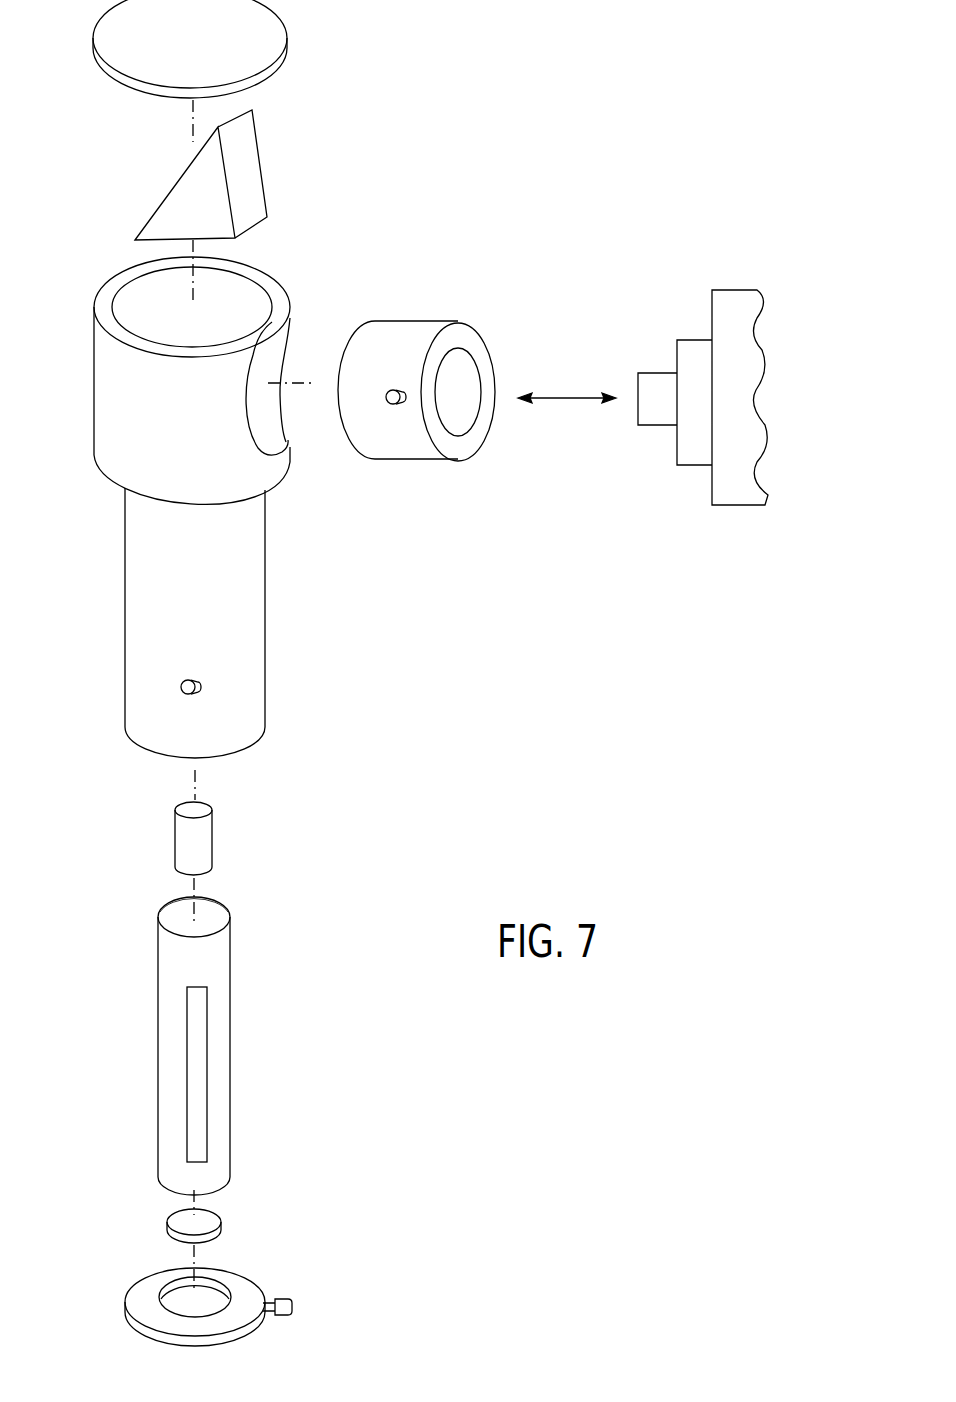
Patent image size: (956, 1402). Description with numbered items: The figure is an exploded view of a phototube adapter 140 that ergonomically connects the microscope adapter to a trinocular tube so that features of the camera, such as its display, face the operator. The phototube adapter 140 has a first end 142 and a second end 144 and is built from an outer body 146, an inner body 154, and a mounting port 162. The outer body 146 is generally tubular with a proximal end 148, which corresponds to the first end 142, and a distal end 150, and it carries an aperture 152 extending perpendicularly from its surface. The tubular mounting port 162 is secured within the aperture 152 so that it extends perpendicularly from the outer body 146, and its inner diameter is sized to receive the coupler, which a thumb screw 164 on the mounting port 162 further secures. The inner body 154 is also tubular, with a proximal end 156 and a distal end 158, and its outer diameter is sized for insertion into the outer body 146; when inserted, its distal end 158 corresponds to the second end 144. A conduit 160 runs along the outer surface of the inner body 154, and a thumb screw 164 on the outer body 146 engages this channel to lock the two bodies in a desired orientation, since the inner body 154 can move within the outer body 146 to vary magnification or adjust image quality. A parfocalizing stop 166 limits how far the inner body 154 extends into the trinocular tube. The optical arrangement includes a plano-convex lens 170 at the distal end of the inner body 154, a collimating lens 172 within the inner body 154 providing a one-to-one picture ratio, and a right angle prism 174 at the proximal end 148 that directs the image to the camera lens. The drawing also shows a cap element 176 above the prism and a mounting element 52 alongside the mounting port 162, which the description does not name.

The mounting fixture 52 is at (697, 296).
The phototube adapter 140 is at (629, 692).
The first end 142 is at (246, 489).
The second end 144 is at (296, 1042).
The outer body 146 is at (190, 625).
The proximal end 148 is at (246, 489).
The distal end 150 is at (265, 730).
The aperture 152 is at (277, 438).
The inner body 154 is at (232, 973).
The proximal end 156 is at (228, 906).
The distal end 158 is at (296, 1042).
The conduit 160 is at (205, 1088).
The mounting port 162 is at (440, 325).
The thumb screw 164 is at (392, 405).
The parfocalizing stop 166 is at (129, 1282).
The plano-convex lens 170 is at (222, 1220).
The collimating lens 172 is at (212, 832).
The right angle prism 174 is at (262, 162).
The cap disc 176 is at (287, 33).